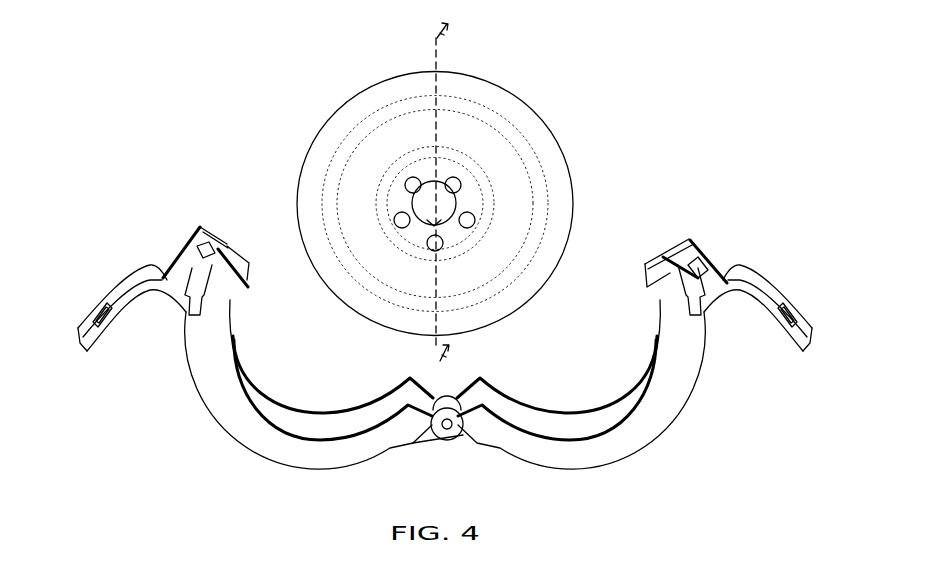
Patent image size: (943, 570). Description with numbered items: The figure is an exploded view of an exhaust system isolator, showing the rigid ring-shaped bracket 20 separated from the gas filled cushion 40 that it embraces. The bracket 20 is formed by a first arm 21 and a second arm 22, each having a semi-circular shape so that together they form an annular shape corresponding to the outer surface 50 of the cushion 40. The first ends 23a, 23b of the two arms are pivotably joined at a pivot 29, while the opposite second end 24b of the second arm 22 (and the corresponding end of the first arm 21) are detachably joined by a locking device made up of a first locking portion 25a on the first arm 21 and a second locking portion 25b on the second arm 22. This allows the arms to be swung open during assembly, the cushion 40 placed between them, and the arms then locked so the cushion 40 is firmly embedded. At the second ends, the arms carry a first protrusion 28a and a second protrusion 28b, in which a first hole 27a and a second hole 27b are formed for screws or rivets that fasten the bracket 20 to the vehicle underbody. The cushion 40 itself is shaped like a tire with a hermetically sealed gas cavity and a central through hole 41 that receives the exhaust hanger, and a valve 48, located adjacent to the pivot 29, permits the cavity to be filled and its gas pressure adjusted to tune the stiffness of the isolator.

The bracket 20 is at (305, 469).
The first arm 21 is at (253, 426).
The second arm 22 is at (637, 428).
The first end of the first arm 23a is at (362, 457).
The first end of the second arm 23b is at (530, 457).
The second end of the second arm 24b is at (222, 294).
The first locking portion 25a is at (192, 262).
The second locking portion 25b is at (705, 260).
The first hole 27a is at (94, 315).
The second hole 27b is at (801, 314).
The first protrusion 28a is at (135, 289).
The second protrusion 28b is at (752, 292).
The pivot 29 is at (452, 438).
The cushion 40 is at (516, 114).
The through hole 41 is at (447, 207).
The valve 48 is at (432, 338).
The outer surface 50 is at (572, 149).